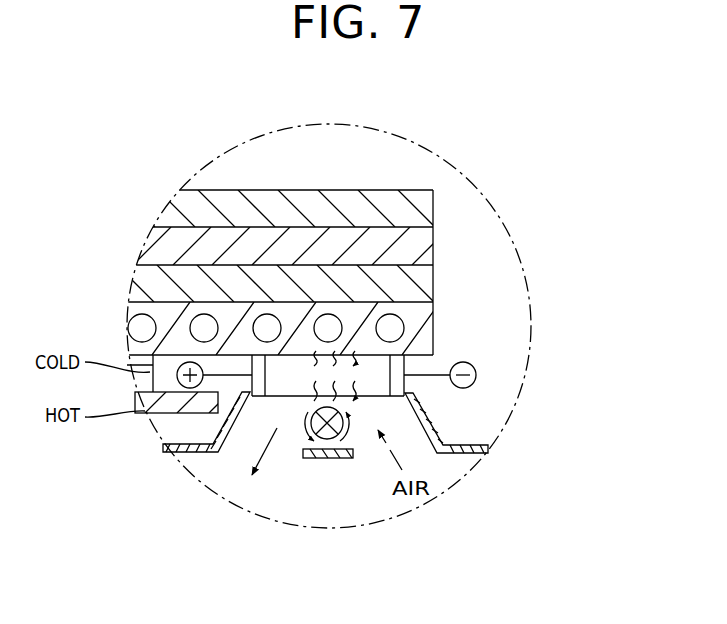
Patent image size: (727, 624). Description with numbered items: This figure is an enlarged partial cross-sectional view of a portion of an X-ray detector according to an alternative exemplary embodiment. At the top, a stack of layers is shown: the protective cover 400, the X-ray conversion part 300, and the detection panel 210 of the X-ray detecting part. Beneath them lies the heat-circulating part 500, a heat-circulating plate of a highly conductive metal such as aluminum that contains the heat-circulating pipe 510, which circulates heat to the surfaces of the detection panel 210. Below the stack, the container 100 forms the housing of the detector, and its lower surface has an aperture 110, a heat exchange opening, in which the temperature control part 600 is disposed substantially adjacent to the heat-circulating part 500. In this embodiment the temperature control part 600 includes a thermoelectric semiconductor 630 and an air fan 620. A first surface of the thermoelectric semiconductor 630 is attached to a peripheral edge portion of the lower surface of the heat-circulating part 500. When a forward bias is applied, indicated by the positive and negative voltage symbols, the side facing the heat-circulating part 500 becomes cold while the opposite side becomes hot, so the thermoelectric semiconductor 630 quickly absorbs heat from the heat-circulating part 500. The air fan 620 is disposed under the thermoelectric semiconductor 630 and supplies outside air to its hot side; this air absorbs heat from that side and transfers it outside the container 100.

The container 100 is at (183, 452).
The aperture 110 is at (277, 448).
The detection panel 210 is at (425, 284).
The X-ray conversion part 300 is at (425, 247).
The protective cover 400 is at (425, 211).
The heat-circulating part 500 is at (323, 272).
The heat-circulating pipe 510 is at (138, 332).
The temperature control part 600 is at (478, 429).
The air fan 620 is at (388, 402).
The thermoelectric semiconductor 630 is at (346, 409).